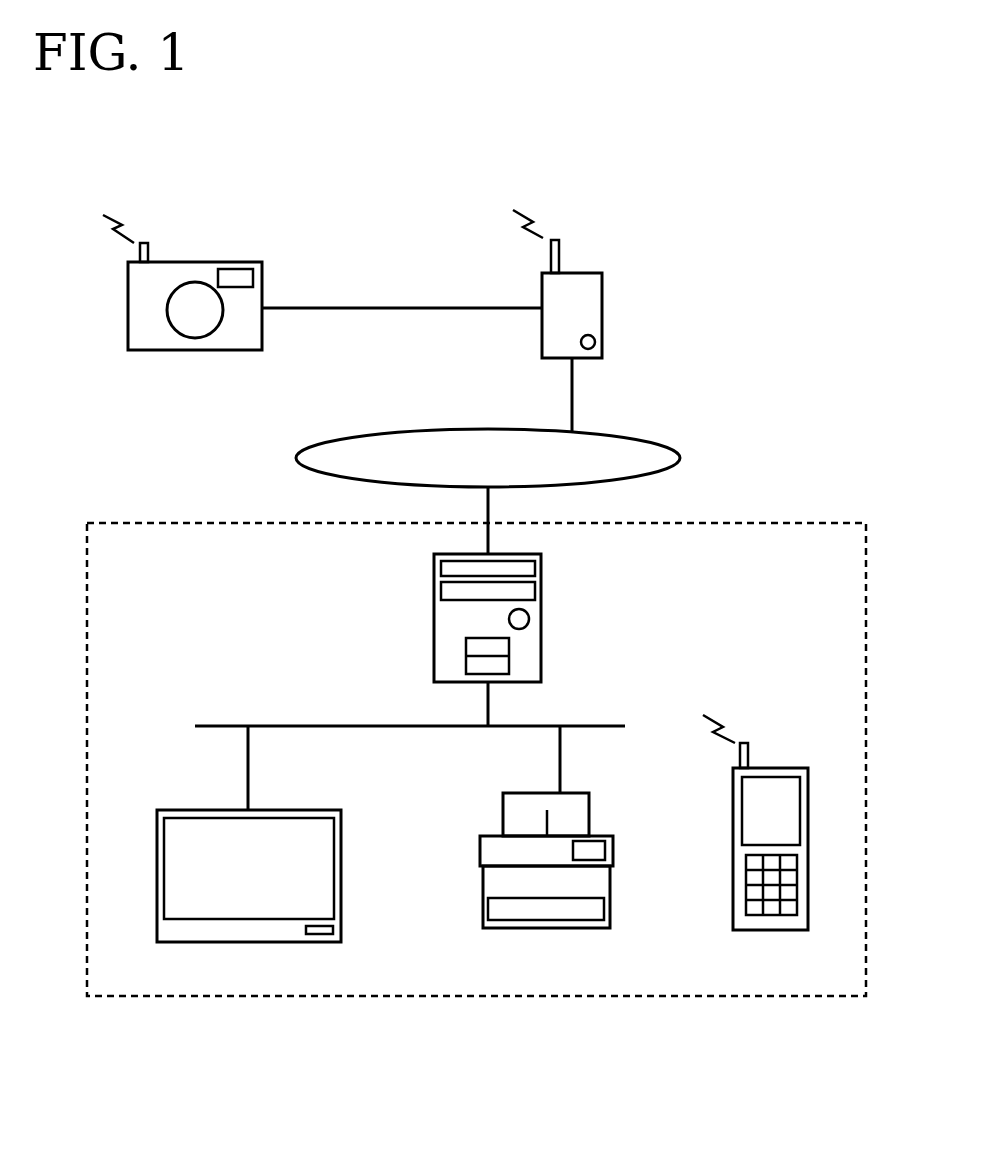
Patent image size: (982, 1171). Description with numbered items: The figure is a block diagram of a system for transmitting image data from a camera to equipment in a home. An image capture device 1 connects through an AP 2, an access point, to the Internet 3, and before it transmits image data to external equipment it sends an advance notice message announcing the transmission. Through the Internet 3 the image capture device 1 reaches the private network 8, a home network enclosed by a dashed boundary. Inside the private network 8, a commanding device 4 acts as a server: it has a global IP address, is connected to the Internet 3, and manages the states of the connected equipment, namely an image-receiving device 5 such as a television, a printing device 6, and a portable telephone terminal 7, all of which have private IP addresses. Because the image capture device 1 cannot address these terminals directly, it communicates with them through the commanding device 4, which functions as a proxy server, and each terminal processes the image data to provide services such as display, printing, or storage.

The image capture device 1 is at (208, 262).
The AP (Access Point) 2 is at (586, 273).
The Internet 3 is at (650, 440).
The commanding device 4 is at (541, 600).
The image-receiving device 5 is at (341, 851).
The printing device 6 is at (600, 836).
The portable telephone terminal 7 is at (780, 768).
The private network 8 is at (808, 522).